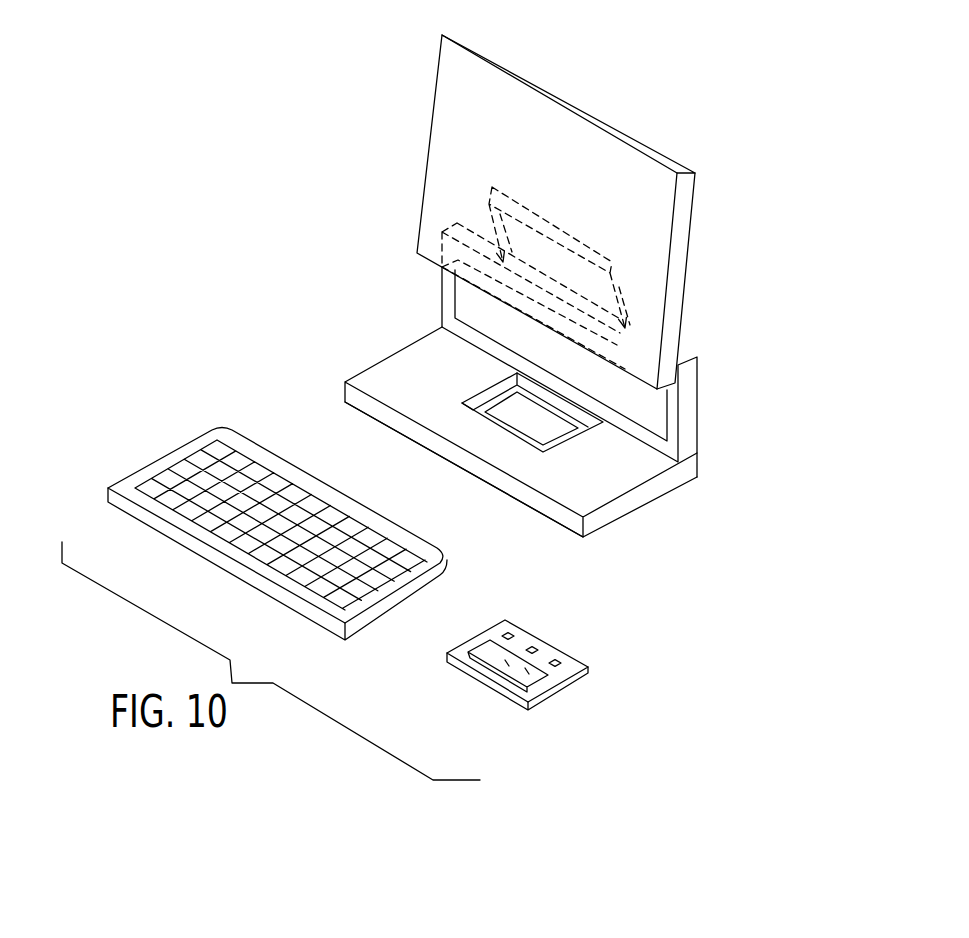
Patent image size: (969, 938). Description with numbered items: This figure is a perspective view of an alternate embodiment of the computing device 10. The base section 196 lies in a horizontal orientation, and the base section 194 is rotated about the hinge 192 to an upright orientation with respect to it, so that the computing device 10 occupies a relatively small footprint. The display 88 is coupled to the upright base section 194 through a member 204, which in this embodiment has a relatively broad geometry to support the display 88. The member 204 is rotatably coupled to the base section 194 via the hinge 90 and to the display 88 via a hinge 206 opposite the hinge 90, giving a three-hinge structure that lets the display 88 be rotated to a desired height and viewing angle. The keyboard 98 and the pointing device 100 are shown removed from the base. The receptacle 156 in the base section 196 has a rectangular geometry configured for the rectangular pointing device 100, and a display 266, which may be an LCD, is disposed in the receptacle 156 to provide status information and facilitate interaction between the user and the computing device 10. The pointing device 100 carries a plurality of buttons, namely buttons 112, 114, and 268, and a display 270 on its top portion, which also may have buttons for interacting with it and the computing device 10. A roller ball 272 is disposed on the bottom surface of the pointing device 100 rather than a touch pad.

The computing device 10 is at (718, 133).
The display 88 is at (506, 58).
The hinge 90 is at (627, 335).
The keyboard 98 is at (226, 556).
The pointing device 100 is at (562, 694).
The button 112 is at (513, 631).
The button 114 is at (562, 654).
The receptacle 156 is at (480, 397).
The hinge 192 is at (714, 473).
The base section 194 is at (699, 416).
The base section 196 is at (603, 527).
The member 204 is at (630, 323).
The hinge 206 is at (540, 214).
The display 266 is at (517, 420).
The button 268 is at (533, 647).
The display 270 is at (484, 655).
The roller ball 272 is at (515, 672).